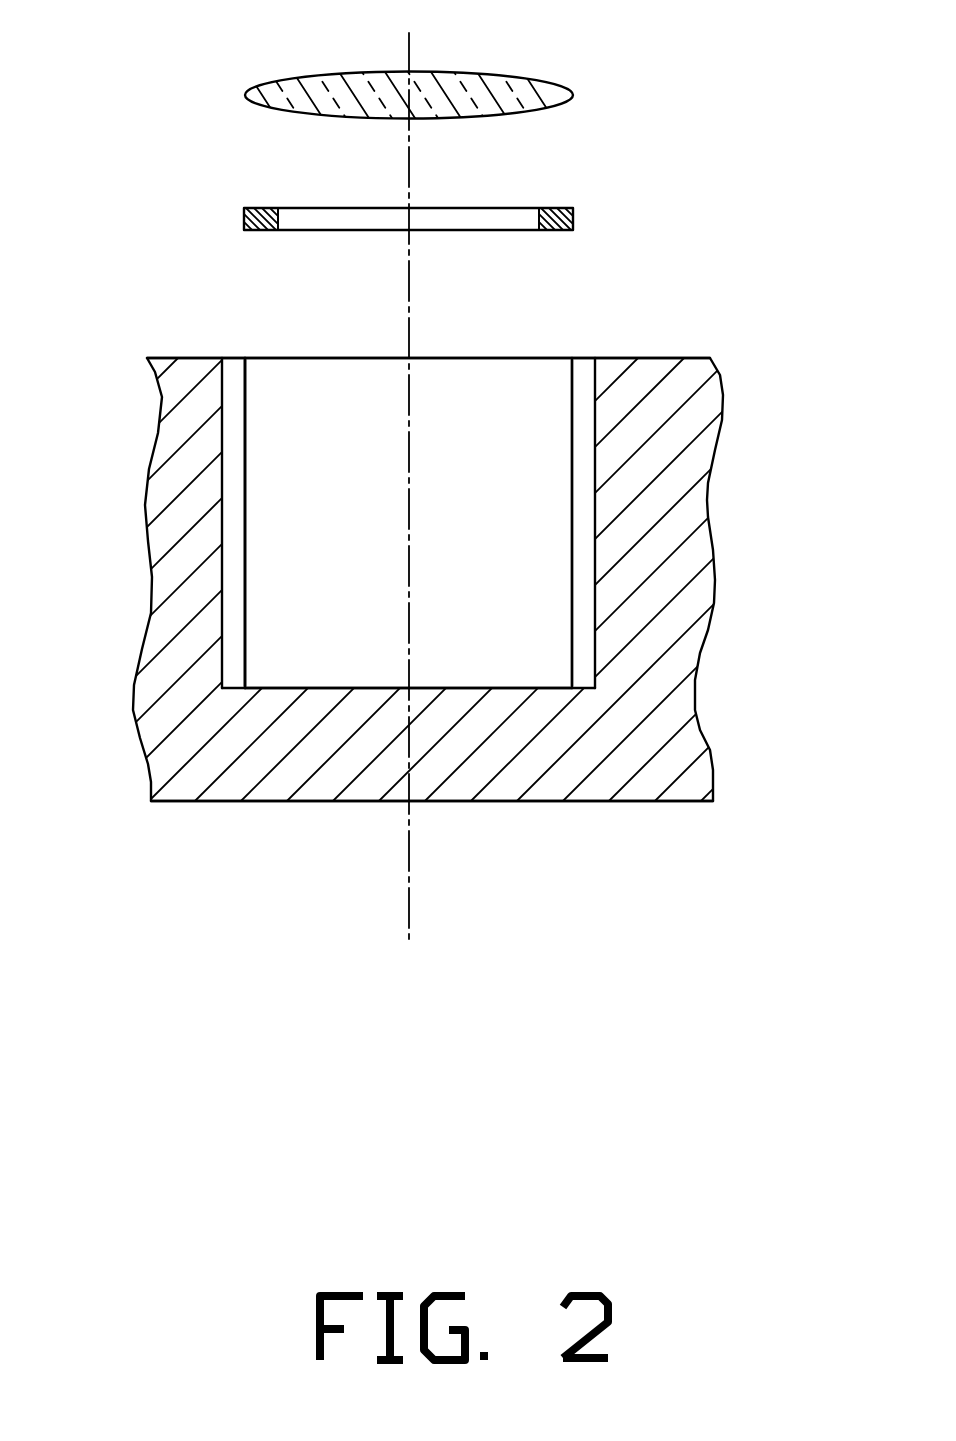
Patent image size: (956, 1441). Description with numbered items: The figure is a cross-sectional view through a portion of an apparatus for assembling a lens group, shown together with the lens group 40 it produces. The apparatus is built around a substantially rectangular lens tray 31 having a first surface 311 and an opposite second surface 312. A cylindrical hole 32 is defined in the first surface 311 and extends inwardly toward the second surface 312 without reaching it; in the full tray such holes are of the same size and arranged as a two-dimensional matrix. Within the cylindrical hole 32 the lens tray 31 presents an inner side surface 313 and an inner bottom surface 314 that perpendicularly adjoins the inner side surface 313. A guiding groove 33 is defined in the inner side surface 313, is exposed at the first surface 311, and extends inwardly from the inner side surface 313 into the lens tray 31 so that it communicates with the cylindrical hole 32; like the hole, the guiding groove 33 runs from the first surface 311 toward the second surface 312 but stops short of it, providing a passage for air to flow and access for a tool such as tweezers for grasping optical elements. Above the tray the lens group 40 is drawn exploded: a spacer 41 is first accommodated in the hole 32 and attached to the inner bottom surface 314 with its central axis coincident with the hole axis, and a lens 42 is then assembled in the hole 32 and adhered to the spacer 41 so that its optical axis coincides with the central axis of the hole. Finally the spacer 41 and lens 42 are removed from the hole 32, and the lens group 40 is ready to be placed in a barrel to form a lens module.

The lens group 40 is at (321, 117).
The spacer 41 is at (366, 189).
The lens 42 is at (307, 75).
The lens tray 31 is at (690, 548).
The first surface 311 is at (663, 355).
The second surface 312 is at (620, 803).
The inner side surface 313 is at (248, 438).
The inner bottom surface 314 is at (507, 683).
The cylindrical hole 32 is at (520, 413).
The guiding groove 33 is at (235, 505).